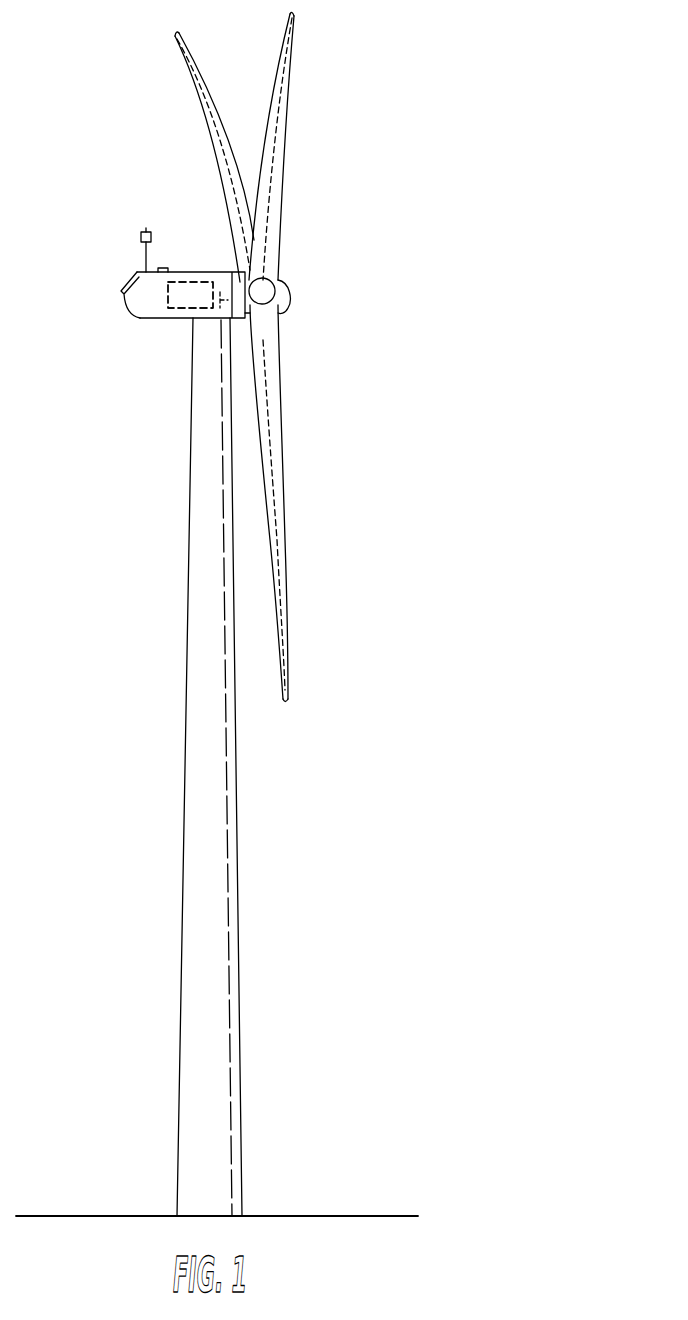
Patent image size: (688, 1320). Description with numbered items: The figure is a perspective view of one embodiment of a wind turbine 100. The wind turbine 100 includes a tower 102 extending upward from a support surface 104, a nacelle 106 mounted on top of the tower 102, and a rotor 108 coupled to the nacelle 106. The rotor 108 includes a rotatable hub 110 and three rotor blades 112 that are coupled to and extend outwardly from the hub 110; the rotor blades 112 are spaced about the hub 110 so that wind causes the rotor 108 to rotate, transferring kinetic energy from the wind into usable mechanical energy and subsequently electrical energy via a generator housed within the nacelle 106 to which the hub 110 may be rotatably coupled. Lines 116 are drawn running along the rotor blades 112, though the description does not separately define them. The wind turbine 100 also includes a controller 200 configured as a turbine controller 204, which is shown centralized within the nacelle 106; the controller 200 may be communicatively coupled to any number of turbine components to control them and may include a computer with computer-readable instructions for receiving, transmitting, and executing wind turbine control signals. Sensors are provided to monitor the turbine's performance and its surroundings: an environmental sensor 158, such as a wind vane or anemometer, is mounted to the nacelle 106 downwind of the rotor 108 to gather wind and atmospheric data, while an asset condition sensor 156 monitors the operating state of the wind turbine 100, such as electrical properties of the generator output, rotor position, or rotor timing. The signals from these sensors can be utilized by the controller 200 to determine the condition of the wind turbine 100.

The wind turbine 100 is at (413, 135).
The tower 102 is at (212, 837).
The support surface 104 is at (135, 1216).
The nacelle 106 is at (158, 320).
The rotor 108 is at (274, 356).
The rotatable hub 110 is at (288, 294).
The rotor blade 112 is at (250, 356).
The blade sensor 116 is at (215, 177).
The asset condition sensor 156 is at (222, 320).
The environmental sensor 158 is at (140, 260).
The controller 200 is at (187, 282).
The turbine controller 204 is at (174, 247).